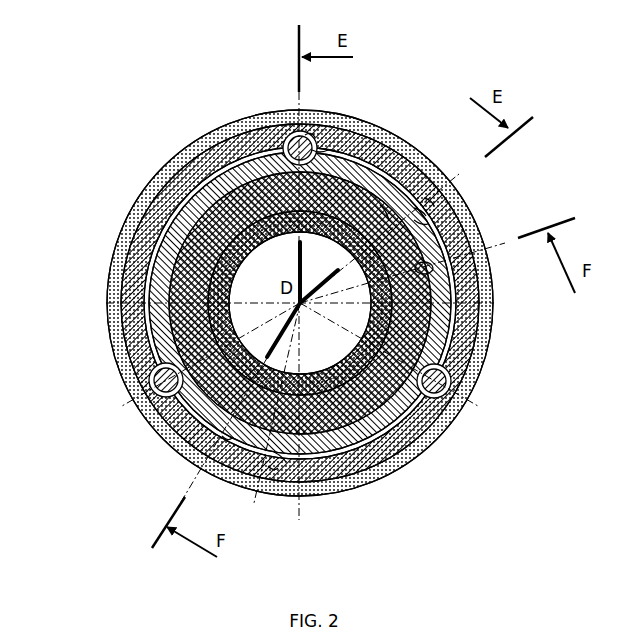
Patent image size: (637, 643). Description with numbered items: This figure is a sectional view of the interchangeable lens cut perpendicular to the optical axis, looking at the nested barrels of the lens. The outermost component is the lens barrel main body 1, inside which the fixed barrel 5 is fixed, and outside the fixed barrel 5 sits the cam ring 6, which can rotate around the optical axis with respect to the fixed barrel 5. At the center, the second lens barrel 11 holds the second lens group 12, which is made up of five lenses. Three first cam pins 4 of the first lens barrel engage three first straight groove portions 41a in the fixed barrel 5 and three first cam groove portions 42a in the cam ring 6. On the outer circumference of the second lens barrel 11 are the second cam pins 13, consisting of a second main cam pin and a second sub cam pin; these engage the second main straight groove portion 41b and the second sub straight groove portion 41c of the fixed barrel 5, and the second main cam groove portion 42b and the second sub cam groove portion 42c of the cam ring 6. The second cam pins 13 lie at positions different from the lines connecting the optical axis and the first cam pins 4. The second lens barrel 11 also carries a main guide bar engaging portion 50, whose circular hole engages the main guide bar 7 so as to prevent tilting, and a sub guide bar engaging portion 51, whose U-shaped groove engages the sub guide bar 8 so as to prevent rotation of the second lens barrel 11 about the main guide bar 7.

The lens barrel main body 1 is at (187, 158).
The first cam pin 4 is at (290, 157).
The fixed barrel 5 is at (163, 238).
The cam ring 6 is at (123, 290).
The main guide bar 7 is at (435, 268).
The sub guide bar 8 is at (213, 420).
The second lens barrel 11 is at (330, 378).
The second lens group 12 is at (335, 320).
The second cam pins 13 is at (420, 212).
The first straight groove portion 41a is at (317, 153).
The second main straight groove portion 41b is at (420, 223).
The second sub straight groove portion 41c is at (227, 440).
The first cam groove portion 42a is at (310, 140).
The second main cam groove portion 42b is at (430, 203).
The second sub cam groove portion 42c is at (273, 470).
The main guide bar engaging portion 50 is at (387, 217).
The sub guide bar engaging portion 51 is at (280, 415).